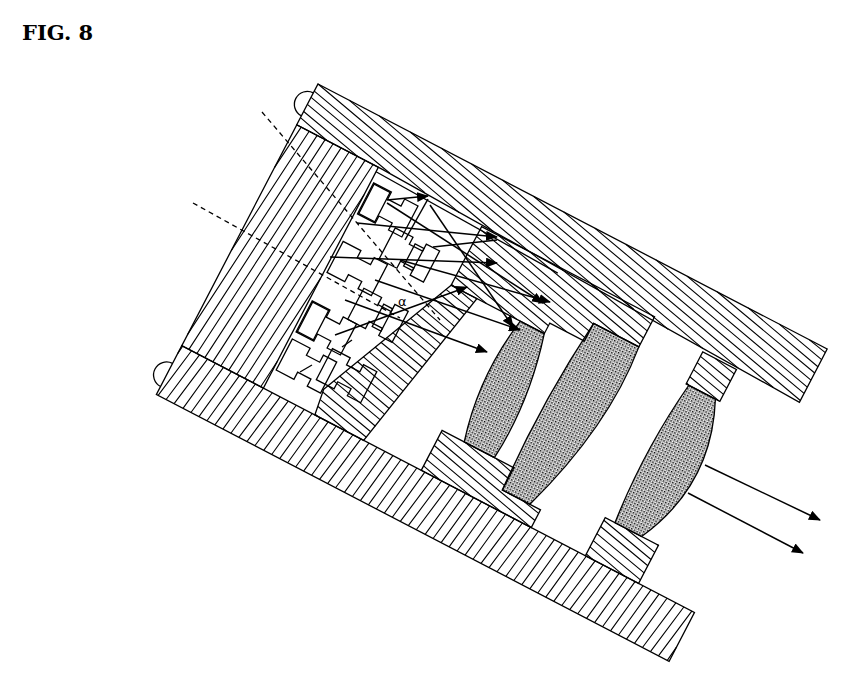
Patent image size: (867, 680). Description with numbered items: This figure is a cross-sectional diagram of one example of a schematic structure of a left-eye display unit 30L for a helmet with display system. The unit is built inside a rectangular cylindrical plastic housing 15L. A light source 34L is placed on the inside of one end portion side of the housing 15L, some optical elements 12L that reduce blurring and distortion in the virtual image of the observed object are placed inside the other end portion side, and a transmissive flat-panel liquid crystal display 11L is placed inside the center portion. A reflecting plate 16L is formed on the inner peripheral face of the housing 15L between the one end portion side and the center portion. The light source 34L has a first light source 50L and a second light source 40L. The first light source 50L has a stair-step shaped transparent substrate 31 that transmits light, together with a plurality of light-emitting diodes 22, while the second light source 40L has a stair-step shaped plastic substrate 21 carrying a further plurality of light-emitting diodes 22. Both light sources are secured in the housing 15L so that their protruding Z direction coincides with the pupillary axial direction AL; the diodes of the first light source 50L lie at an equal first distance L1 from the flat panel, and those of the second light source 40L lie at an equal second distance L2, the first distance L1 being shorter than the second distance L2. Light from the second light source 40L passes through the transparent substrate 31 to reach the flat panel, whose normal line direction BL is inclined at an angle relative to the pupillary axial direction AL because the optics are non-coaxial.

The left-eye display unit 30L is at (604, 132).
The reflecting plate 16L is at (467, 178).
The transmissive flat-panel liquid crystal display 11L is at (330, 415).
The rectangular cylindrical plastic housing 15L is at (440, 455).
The optical elements 12L is at (613, 517).
The light source 34L is at (245, 297).
The second light source 40L is at (134, 230).
The first light source 50L is at (134, 348).
The plastic substrate 21 is at (255, 258).
The light-emitting diodes 22 is at (252, 290).
The transparent substrate 31 is at (250, 327).
The direction of the normal line of the flat panel BL is at (339, 207).
The pupillary axial direction AL is at (283, 255).
The first distance L1 is at (316, 372).
The second distance L2 is at (354, 340).